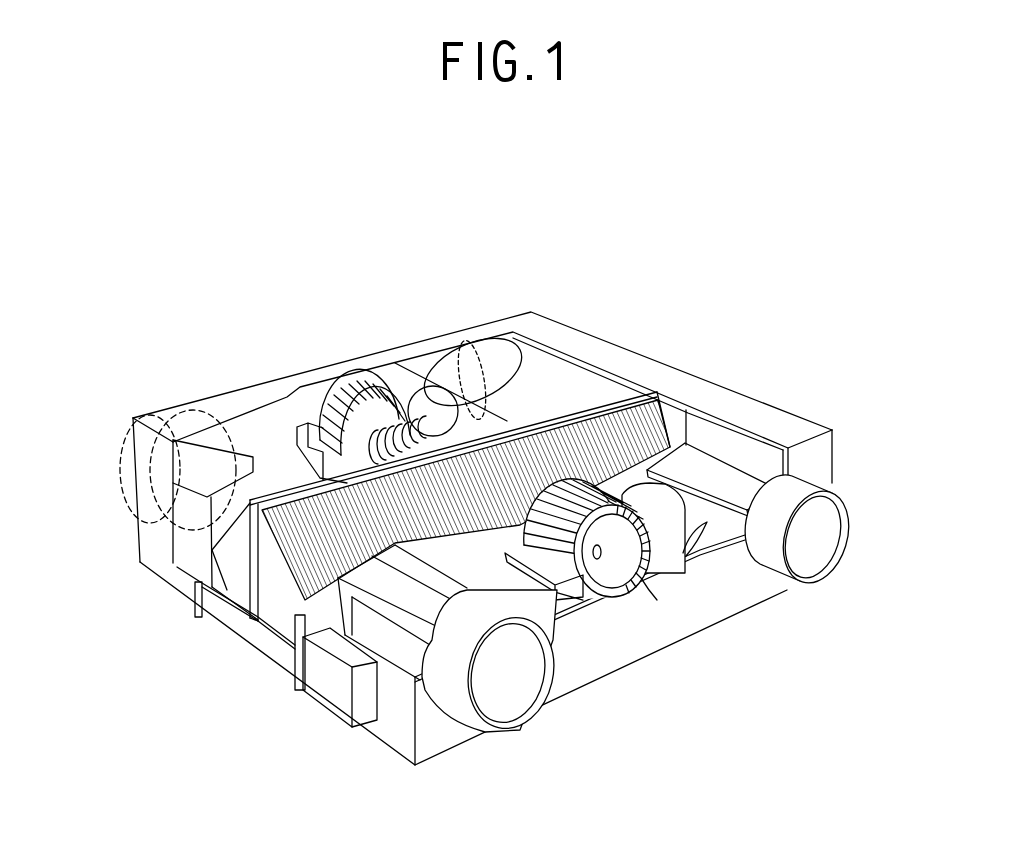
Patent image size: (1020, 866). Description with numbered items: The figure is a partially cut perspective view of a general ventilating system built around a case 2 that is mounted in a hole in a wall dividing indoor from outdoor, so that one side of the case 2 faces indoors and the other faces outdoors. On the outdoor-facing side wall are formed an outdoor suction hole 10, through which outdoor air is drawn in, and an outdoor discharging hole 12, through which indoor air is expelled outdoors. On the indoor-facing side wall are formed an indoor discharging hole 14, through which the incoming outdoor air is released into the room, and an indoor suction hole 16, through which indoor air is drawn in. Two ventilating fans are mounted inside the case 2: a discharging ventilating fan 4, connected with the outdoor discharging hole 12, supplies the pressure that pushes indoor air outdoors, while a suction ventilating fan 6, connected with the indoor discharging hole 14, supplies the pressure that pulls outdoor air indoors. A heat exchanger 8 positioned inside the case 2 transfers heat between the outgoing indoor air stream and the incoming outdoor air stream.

The case 2 is at (775, 415).
The discharging ventilating fan 4 is at (330, 410).
The suction ventilating fan 6 is at (627, 551).
The heat exchanger 8 is at (633, 417).
The outdoor suction hole 10 is at (124, 462).
The outdoor discharging hole 12 is at (428, 373).
The indoor discharging hole 14 is at (552, 649).
The indoor suction hole 16 is at (831, 513).